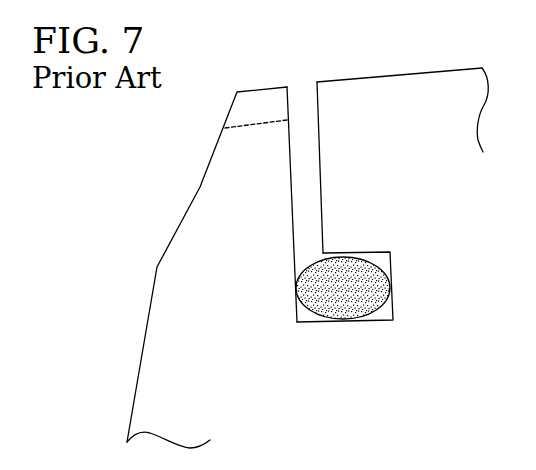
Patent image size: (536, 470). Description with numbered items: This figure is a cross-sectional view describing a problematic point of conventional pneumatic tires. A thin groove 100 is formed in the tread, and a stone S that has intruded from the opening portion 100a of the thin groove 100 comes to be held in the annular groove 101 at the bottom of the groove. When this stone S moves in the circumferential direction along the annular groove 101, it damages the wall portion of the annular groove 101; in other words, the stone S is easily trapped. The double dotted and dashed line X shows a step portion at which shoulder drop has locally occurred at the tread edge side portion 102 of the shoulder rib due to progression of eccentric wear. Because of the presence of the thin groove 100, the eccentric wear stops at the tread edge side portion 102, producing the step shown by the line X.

The thin groove 100 is at (305, 137).
The opening portion 100a is at (303, 88).
The annular groove 101 is at (380, 260).
The tread edge side portion 102 is at (228, 177).
The stone S is at (297, 293).
The double dotted and dashed line X is at (258, 123).